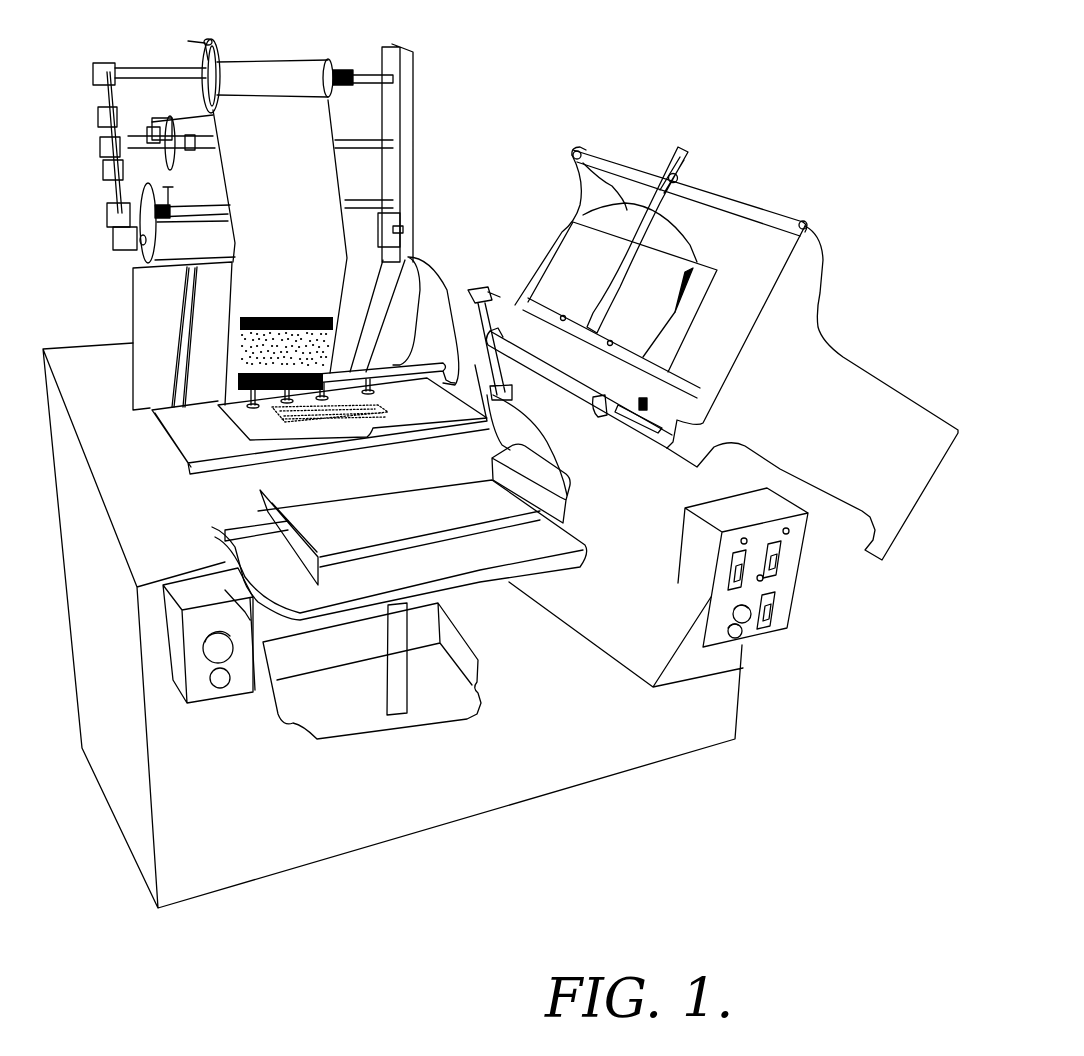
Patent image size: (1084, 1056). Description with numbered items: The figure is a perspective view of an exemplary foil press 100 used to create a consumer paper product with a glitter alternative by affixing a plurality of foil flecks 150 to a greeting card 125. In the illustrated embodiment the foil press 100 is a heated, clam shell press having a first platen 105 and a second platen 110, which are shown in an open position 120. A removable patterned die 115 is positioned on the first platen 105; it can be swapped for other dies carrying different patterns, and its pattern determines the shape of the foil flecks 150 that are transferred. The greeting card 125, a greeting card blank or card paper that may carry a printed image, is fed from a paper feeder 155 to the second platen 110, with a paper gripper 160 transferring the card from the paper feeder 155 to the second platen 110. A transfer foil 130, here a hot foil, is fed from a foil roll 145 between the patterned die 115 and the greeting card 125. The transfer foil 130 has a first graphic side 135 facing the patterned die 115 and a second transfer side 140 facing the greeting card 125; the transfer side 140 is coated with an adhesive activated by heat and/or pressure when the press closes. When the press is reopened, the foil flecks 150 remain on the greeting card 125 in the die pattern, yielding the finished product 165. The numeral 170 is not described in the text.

The foil press 100 is at (728, 71).
The first platen 105 is at (138, 289).
The second platen 110 is at (173, 423).
The patterned die 115 is at (225, 360).
The open position 120 is at (535, 214).
The greeting card 125 is at (253, 418).
The transfer foil 130 is at (332, 265).
The graphic side 135 is at (287, 338).
The transfer side 140 is at (349, 171).
The foil roll 145 is at (267, 62).
The foil flecks 150 is at (370, 433).
The paper feeder 155 is at (665, 206).
The paper gripper 160 is at (235, 388).
The finished product 165 is at (263, 428).
The feed tray 170 is at (447, 516).